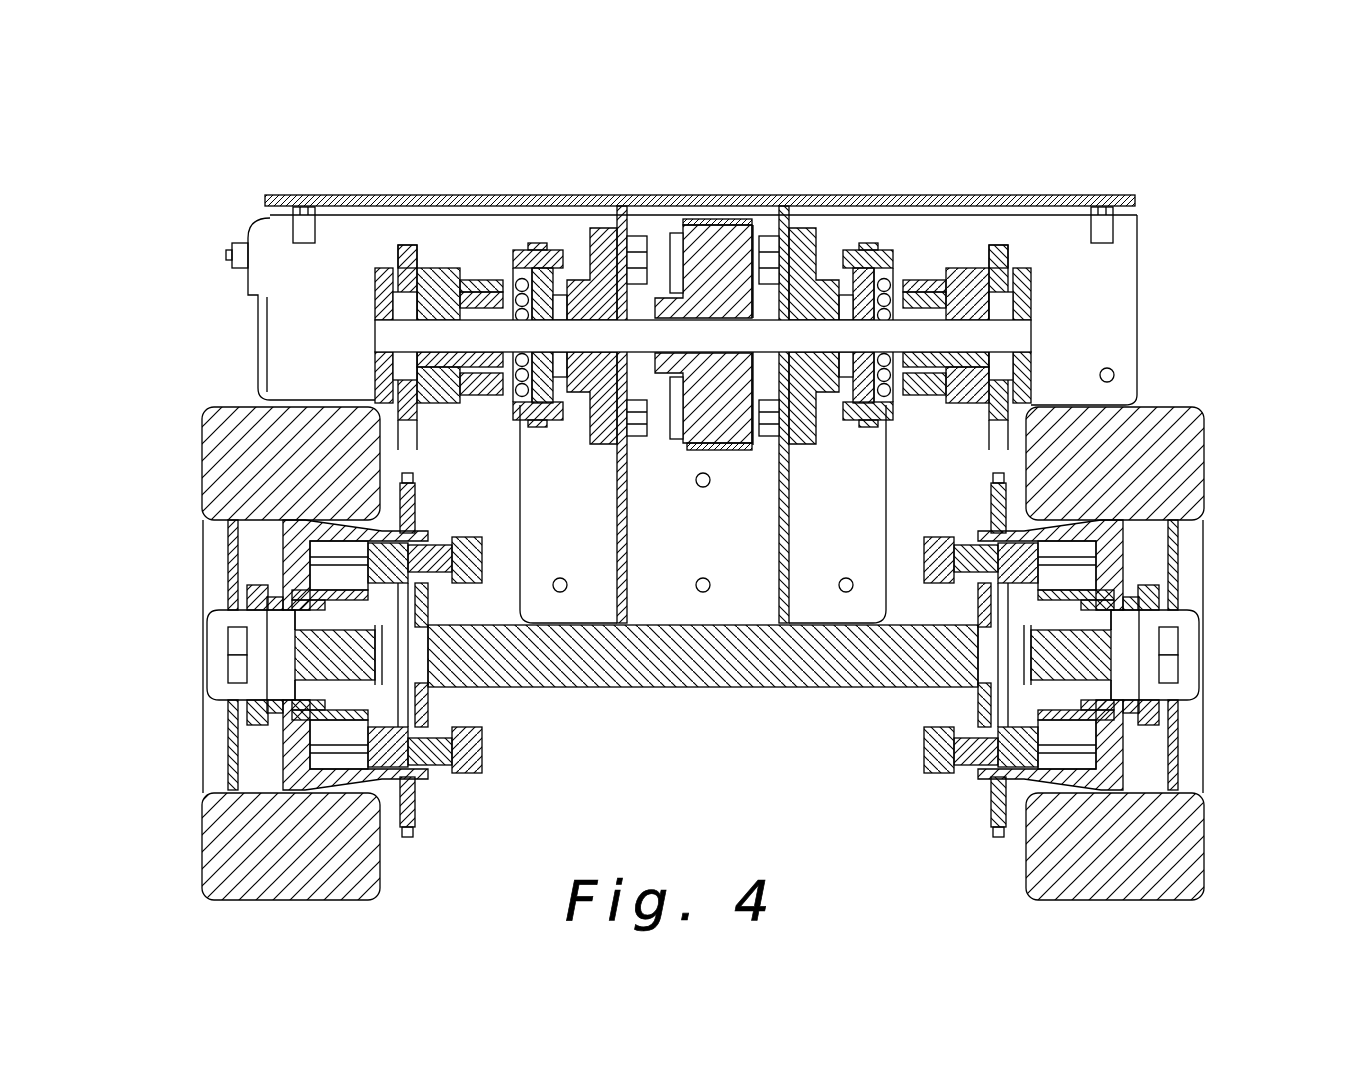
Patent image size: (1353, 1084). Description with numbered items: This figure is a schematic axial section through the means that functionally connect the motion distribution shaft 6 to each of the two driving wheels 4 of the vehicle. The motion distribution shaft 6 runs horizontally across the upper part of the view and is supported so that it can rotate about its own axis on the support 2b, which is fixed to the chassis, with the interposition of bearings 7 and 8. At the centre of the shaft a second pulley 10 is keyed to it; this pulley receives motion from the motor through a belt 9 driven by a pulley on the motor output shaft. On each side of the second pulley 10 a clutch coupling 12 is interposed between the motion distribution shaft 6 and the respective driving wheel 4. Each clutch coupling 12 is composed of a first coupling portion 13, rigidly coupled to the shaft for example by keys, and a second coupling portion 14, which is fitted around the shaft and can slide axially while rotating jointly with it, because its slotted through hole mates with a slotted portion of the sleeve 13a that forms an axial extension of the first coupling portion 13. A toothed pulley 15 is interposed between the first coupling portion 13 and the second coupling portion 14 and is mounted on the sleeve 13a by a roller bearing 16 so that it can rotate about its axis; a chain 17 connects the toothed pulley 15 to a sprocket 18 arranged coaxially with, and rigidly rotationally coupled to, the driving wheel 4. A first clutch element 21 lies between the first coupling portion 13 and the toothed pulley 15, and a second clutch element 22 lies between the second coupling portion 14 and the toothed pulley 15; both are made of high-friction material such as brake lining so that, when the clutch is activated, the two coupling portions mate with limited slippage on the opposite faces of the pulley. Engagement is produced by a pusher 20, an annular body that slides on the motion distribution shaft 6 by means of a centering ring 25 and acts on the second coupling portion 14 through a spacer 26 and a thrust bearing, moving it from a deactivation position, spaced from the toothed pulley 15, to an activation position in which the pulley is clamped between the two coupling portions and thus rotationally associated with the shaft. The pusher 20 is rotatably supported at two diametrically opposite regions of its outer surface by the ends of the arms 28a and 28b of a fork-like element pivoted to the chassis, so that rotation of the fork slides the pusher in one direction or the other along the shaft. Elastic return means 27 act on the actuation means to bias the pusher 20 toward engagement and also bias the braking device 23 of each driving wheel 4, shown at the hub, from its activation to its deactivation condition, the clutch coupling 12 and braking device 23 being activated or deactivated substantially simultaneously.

The support 2b is at (1128, 197).
The driving wheels 4 is at (262, 436).
The motion distribution shaft 6 is at (762, 335).
The bearing 7 is at (662, 298).
The bearing 8 is at (825, 300).
The belt 9 is at (745, 300).
The second pulley 10 is at (722, 250).
The clutch coupling 12 is at (458, 243).
The first coupling portion 13 is at (256, 228).
The sleeve 13a is at (400, 345).
The second coupling portion 14 is at (440, 280).
The toothed pulley 15 is at (402, 260).
The roller bearing 16 is at (385, 364).
The chain 17 is at (405, 250).
The sprocket 18 is at (421, 808).
The pusher 20 is at (540, 422).
The first clutch element 21 is at (375, 292).
The second clutch element 22 is at (395, 458).
The braking device 23 is at (405, 590).
The centering ring 25 is at (620, 250).
The spacer 26 is at (475, 400).
The elastic return means 27 is at (545, 275).
The arm of fork-like element 28a is at (575, 430).
The arm of fork-like element 28b is at (525, 250).